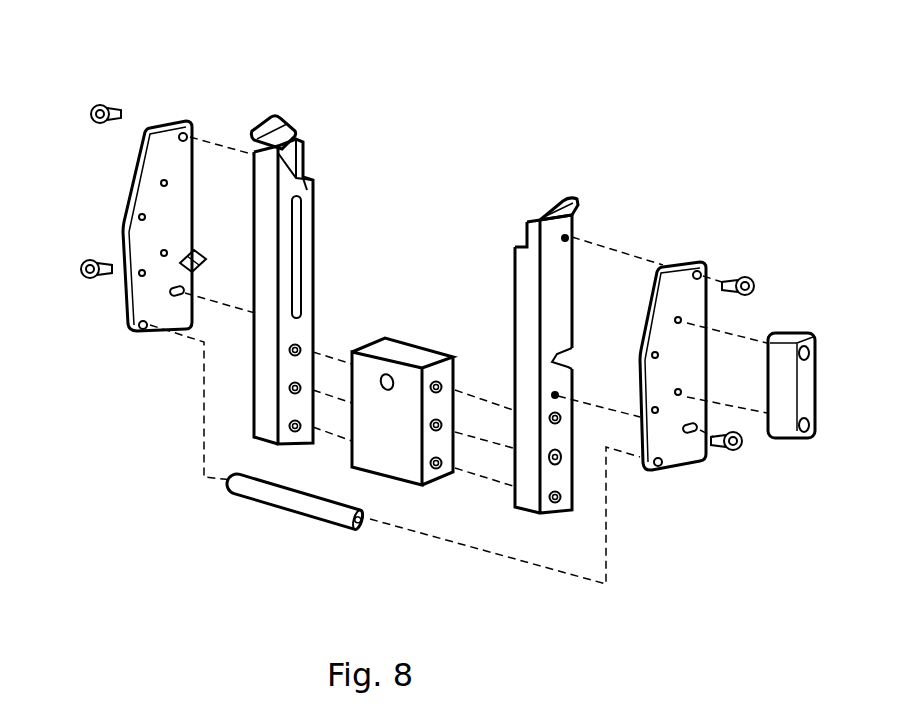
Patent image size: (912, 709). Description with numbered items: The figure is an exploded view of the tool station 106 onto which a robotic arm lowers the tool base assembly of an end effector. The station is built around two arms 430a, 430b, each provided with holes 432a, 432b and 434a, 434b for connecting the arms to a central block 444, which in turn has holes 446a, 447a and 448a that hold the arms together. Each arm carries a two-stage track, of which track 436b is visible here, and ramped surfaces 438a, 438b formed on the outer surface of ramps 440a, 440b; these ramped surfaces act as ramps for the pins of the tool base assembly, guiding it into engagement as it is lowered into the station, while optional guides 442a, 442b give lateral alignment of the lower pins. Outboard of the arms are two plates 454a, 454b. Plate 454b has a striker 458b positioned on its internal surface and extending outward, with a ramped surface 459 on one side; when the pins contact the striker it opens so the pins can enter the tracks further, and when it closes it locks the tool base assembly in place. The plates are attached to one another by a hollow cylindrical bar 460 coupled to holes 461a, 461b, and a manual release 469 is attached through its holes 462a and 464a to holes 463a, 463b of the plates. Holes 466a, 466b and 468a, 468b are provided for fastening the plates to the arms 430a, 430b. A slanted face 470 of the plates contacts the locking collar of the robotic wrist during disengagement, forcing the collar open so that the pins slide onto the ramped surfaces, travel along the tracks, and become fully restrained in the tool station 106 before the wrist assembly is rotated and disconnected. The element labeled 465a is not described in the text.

The tool station 106 is at (204, 562).
The arm 430a is at (578, 227).
The arm 430b is at (318, 203).
The hole 432a is at (553, 503).
The hole 432b is at (295, 432).
The hole 434a is at (560, 464).
The hole 434b is at (290, 392).
The two-stage track 436b is at (296, 252).
The ramped surface 438a is at (517, 246).
The ramped surface 438b is at (305, 177).
The ramp 440a is at (528, 217).
The ramp 440b is at (292, 138).
The guide 442a is at (575, 193).
The guide 442b is at (267, 115).
The block 444 is at (380, 443).
The hole 446a is at (441, 382).
The hole 447a is at (443, 425).
The hole 448a is at (442, 472).
The plate 454a is at (686, 260).
The plate 454b is at (163, 120).
The striker 458b is at (194, 252).
The ramped surface 459 is at (201, 268).
The hollow cylindrical bar 460 is at (295, 526).
The hole 461a is at (657, 466).
The hole 461b is at (135, 332).
The hole 462a is at (808, 347).
The hole 463a is at (684, 318).
The hole 463b is at (160, 184).
The hole 464a is at (807, 434).
The aperture 465a is at (676, 390).
The hole 466a is at (705, 266).
The hole 466b is at (207, 103).
The hole 468a is at (693, 433).
The hole 468b is at (183, 297).
The manual release 469 is at (803, 388).
The slanted face 470 is at (135, 163).